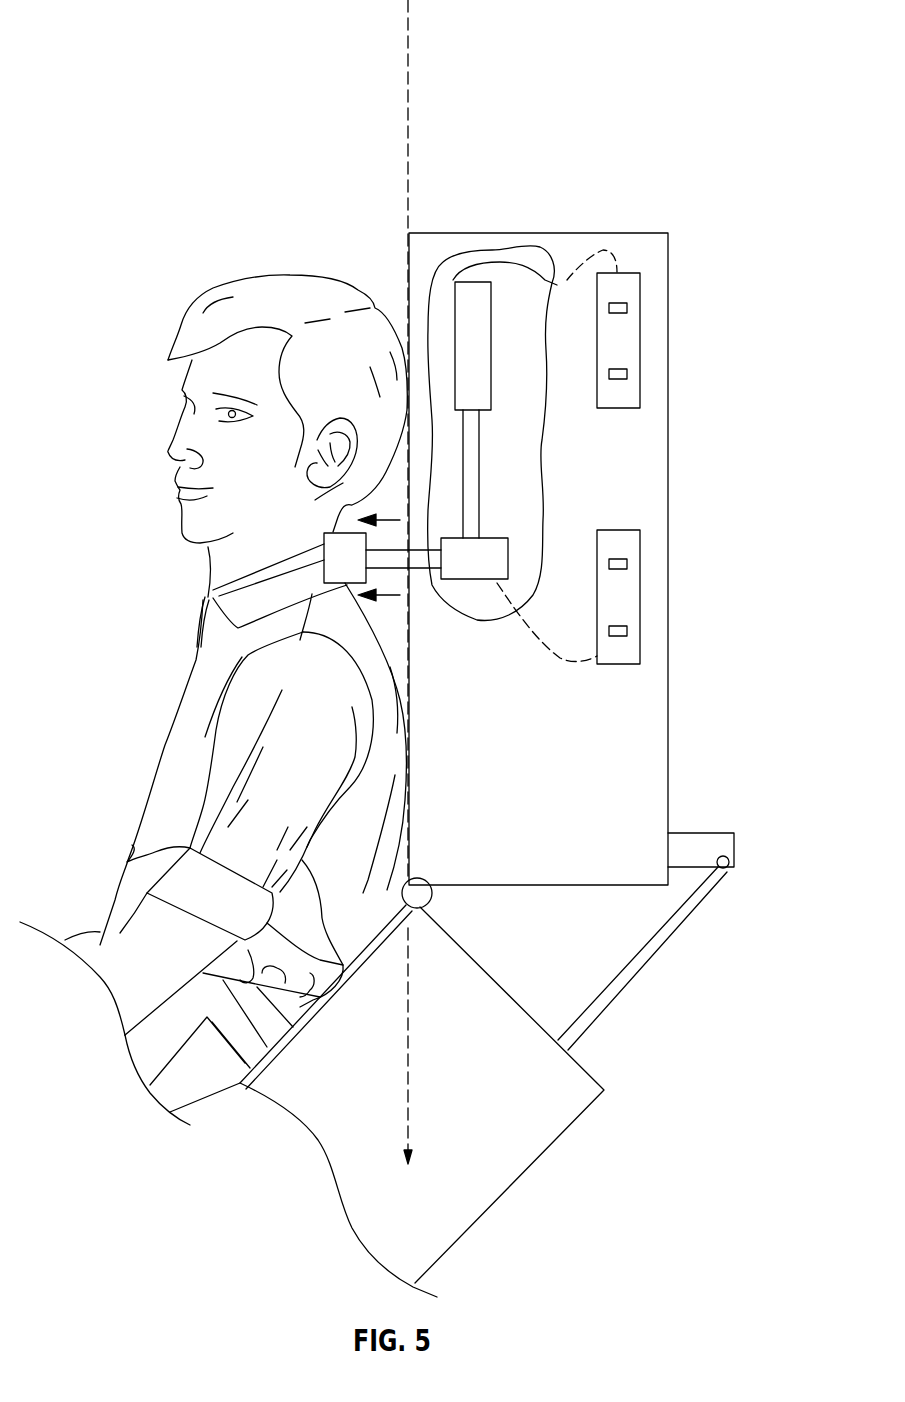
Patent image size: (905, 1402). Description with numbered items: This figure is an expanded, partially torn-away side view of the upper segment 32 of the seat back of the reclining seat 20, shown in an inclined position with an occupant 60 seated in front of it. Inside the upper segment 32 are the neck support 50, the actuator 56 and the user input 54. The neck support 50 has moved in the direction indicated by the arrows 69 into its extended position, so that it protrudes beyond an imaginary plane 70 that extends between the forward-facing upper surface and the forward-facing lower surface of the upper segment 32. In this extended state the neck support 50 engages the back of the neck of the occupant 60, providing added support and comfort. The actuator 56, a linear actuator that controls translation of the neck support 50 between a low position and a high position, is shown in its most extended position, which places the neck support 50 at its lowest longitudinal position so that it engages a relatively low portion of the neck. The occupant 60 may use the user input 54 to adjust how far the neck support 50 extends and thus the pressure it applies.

The reclining seat 20 is at (499, 758).
The upper segment 32 is at (674, 479).
The neck support 50 is at (213, 590).
The user input 54 is at (640, 597).
The actuator 56 is at (470, 280).
The occupant 60 is at (150, 800).
The arrows 69 is at (388, 522).
The imaginary plane 70 is at (410, 60).